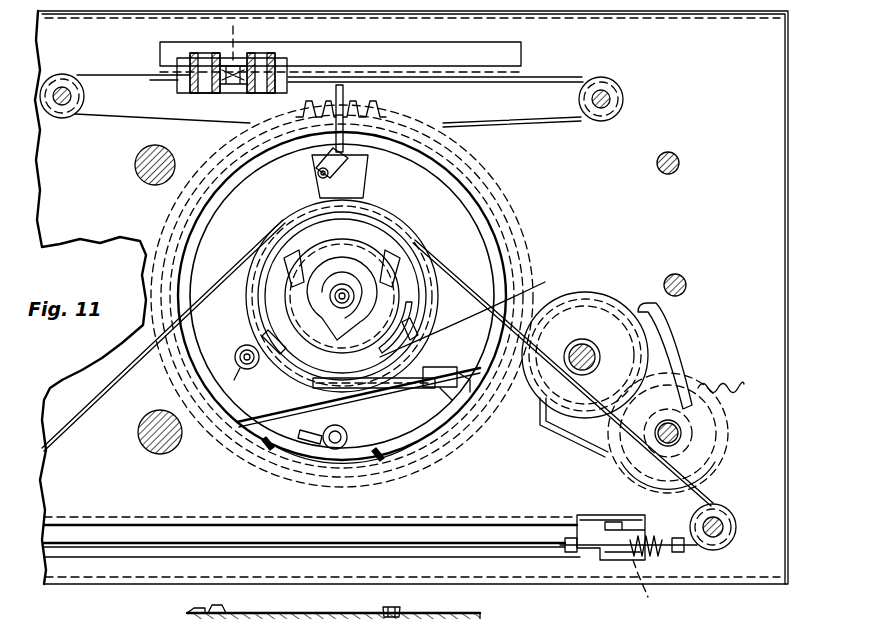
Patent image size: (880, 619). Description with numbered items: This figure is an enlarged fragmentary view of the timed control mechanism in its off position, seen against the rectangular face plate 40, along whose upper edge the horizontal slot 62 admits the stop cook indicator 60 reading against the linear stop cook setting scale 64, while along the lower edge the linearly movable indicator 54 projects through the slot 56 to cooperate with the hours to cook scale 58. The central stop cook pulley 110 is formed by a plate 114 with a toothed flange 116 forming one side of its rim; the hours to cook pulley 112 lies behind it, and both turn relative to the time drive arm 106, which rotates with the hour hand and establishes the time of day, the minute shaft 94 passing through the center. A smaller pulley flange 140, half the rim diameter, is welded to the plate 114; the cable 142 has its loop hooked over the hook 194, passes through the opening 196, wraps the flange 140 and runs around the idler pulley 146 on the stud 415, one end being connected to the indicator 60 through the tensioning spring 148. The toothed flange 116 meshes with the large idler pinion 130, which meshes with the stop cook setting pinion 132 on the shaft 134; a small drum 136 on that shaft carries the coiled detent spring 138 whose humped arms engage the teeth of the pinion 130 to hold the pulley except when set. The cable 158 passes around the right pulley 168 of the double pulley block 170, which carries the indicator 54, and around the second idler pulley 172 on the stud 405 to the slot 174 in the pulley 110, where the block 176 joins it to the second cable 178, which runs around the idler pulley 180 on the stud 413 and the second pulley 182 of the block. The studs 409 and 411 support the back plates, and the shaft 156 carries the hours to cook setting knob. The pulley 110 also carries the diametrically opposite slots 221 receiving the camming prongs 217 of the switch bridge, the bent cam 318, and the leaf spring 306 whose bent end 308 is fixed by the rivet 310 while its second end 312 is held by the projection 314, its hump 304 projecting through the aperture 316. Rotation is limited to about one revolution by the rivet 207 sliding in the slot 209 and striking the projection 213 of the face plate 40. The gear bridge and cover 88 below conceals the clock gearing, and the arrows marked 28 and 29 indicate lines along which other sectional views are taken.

The second idler pulley 172 is at (62, 74).
The stud 405 is at (62, 107).
The cable 158 is at (122, 75).
The double pulley block 170 is at (222, 96).
The second cable 178 is at (582, 122).
The idler pulley 180 is at (601, 77).
The stud 413 is at (612, 98).
The hours to cook scale 58 is at (442, 52).
The slot 56 is at (374, 42).
The linearly movable indicator 54 is at (240, 30).
The right pulley 168 is at (180, 87).
The second pulley 182 is at (232, 94).
The stud 409 is at (135, 167).
The stud 411 is at (138, 435).
The shaft 156 is at (680, 164).
The toothed flange 116 is at (372, 113).
The slot 174 is at (350, 160).
The opening 196 is at (366, 187).
The block 176 is at (318, 175).
The plate 114 is at (440, 150).
The stop cook pulley 110 is at (535, 209).
The pulley flange 140 is at (515, 217).
The bent cam 318 is at (412, 296).
The minute shaft 94 is at (358, 298).
The hook 194 is at (378, 238).
The hours to cook pulley 112 is at (288, 283).
The time drive arm 106 is at (335, 283).
The camming prongs 217 is at (400, 260).
The slots 221 is at (262, 340).
The aperture 316 is at (413, 347).
The hump 304 is at (395, 358).
The leaf spring 306 is at (450, 392).
The second end 312 is at (473, 407).
The projection 314 is at (465, 420).
The direction arrows 29 is at (287, 413).
The bent end portion 308 is at (238, 371).
The rivet 310 is at (238, 378).
The slot 209 is at (300, 441).
The projection 213 is at (322, 446).
The rivet 207 is at (346, 447).
The cable 142 is at (110, 386).
The stop cook pulley idler pinion 130 is at (590, 292).
The detent spring 138 is at (666, 339).
The shaft 134 is at (640, 443).
The stop cook setting pinion 132 is at (730, 384).
The small drum 136 is at (708, 410).
The gear hub / rotation arrows 28 is at (640, 425).
The stud 415 is at (722, 527).
The idler pulley 146 is at (733, 540).
The spring 148 is at (657, 559).
The horizontal slot 62 is at (548, 527).
The stop cook setting scale 64 is at (103, 531).
The gear bridge and cover 88 is at (463, 613).
The face plate 40 is at (78, 590).
The indicator 60 is at (651, 588).